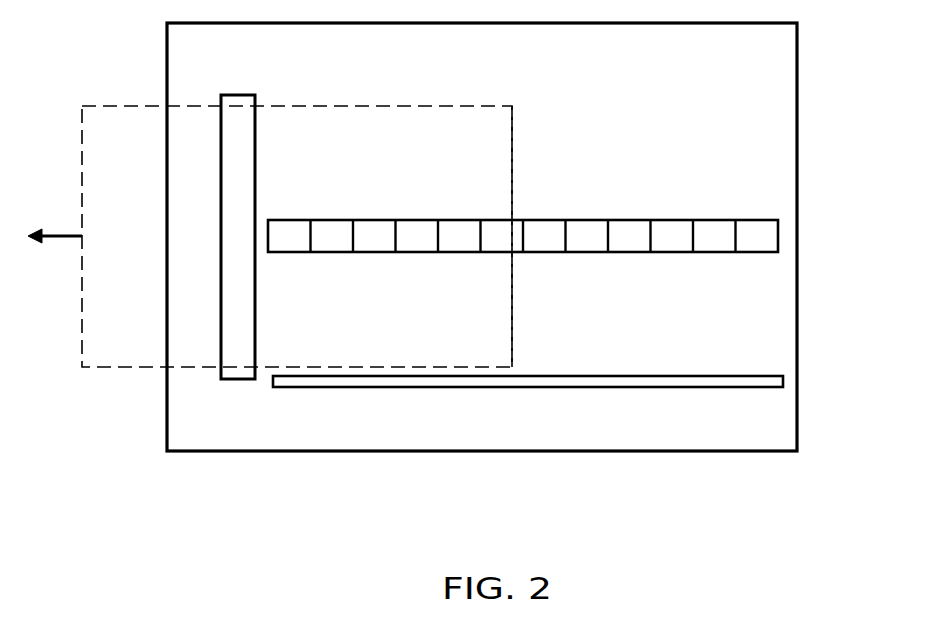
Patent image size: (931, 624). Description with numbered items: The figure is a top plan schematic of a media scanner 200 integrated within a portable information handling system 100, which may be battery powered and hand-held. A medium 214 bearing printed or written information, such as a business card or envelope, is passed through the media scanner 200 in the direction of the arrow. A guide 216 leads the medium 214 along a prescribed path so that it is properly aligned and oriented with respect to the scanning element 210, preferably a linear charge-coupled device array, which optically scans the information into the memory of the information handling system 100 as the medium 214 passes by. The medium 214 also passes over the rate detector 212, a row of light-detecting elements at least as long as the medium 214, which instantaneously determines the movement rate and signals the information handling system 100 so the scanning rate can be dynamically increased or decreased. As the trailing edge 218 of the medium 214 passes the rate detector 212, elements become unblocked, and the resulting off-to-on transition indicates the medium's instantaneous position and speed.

The portable information handling system 100 is at (797, 127).
The media scanner 200 is at (195, 498).
The scanning element 210 is at (238, 93).
The rate detector 212 is at (650, 219).
The medium 214 is at (403, 105).
The guide 216 is at (655, 375).
The trailing edge 218 is at (512, 172).